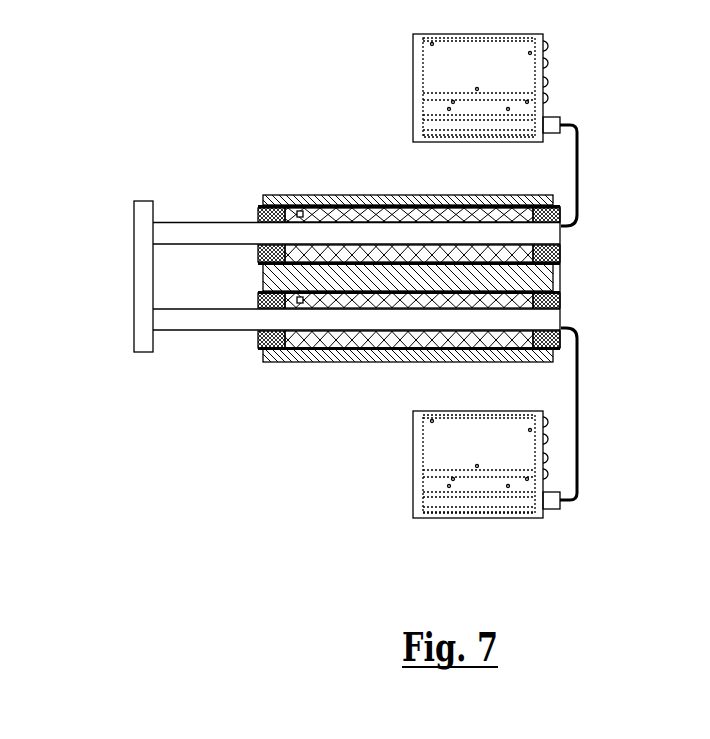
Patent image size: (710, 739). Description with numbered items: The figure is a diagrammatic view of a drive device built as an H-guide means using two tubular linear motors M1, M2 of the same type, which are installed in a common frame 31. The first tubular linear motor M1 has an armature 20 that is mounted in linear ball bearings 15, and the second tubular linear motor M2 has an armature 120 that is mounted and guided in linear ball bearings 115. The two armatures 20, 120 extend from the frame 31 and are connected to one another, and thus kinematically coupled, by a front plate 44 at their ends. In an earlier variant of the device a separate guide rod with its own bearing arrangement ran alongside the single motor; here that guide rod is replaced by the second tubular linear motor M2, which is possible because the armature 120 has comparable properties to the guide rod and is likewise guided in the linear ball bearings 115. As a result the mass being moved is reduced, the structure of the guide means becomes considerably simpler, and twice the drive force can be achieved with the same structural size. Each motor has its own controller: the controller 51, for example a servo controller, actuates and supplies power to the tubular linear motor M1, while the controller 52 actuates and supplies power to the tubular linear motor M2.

The armature 20 is at (171, 236).
The armature 120 is at (178, 325).
The front plate 44 is at (137, 275).
The linear ball bearings 15 is at (257, 212).
The linear ball bearings 115 is at (258, 337).
The frame 31 is at (262, 277).
The tubular linear motor M1 is at (308, 196).
The tubular linear motor M2 is at (306, 362).
The controller 51 is at (427, 68).
The controller 52 is at (413, 450).